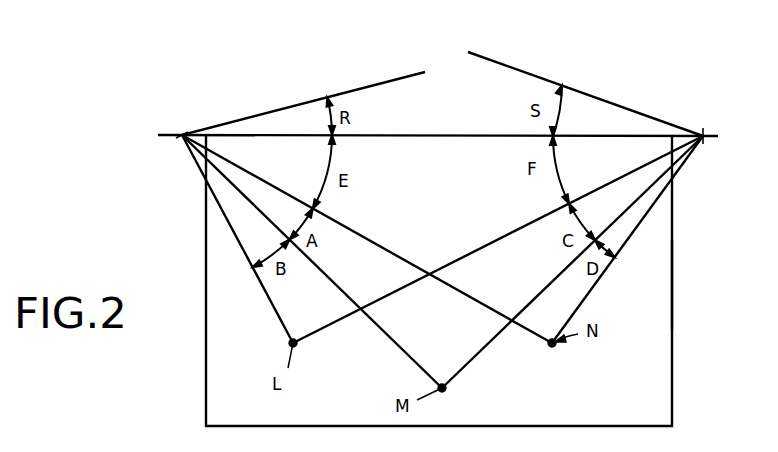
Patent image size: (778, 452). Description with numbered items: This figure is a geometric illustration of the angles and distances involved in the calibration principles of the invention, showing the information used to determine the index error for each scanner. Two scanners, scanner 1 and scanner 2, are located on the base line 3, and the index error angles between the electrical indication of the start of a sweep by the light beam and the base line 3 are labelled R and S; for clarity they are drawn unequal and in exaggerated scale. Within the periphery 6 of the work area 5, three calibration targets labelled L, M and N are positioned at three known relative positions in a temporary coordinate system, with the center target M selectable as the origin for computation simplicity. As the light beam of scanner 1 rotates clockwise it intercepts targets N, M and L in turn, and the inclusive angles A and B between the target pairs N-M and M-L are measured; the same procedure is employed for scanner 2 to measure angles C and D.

The scanner 1 is at (181, 133).
The scanner 2 is at (704, 134).
The base line 3 is at (168, 137).
The work area 5 is at (227, 350).
The periphery 6 is at (673, 289).